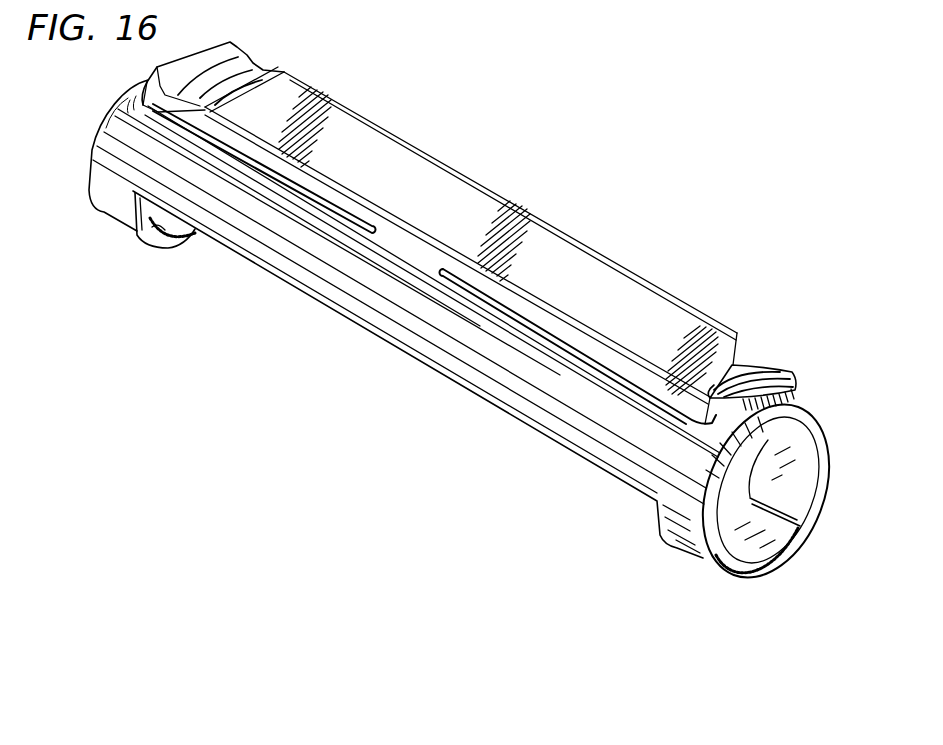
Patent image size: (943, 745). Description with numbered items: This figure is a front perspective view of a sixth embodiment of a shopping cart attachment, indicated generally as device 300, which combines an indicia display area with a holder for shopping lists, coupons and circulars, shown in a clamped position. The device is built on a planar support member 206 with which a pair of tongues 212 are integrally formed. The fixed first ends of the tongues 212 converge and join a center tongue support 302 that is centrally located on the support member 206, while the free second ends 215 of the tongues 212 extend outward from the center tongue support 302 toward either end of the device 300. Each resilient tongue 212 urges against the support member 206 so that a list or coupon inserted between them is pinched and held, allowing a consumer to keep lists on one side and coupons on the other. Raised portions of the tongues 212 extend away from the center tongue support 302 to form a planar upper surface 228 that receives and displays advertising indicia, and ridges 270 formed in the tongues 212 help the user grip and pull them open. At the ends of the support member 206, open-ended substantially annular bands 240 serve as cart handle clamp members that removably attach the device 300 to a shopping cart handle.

The support member 206 is at (433, 347).
The tongue 212 is at (335, 100).
The second end 215 is at (148, 73).
The planar upper surface 228 is at (586, 242).
The annular bands 240 is at (117, 212).
The ridges 270 is at (734, 366).
The device 300 is at (506, 152).
The center tongue support 302 is at (403, 222).